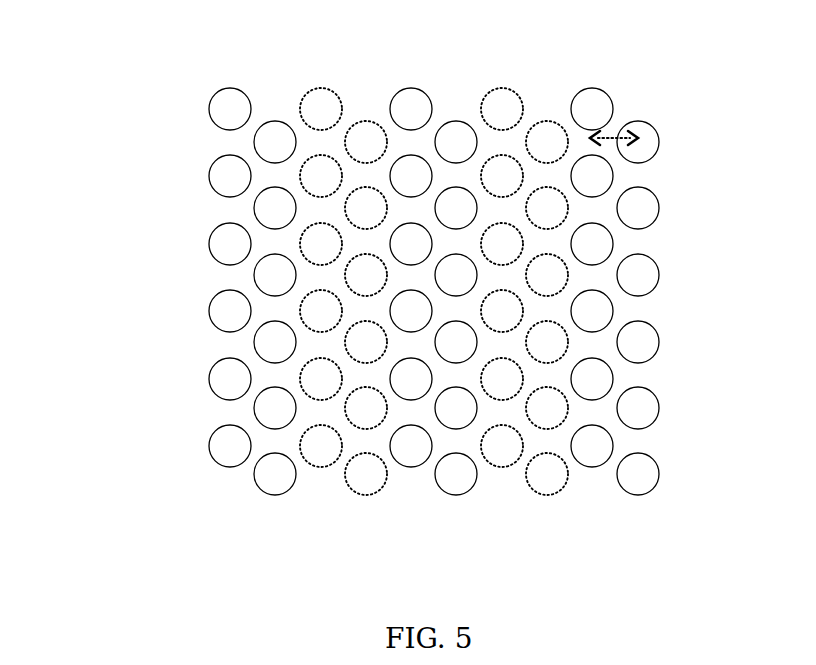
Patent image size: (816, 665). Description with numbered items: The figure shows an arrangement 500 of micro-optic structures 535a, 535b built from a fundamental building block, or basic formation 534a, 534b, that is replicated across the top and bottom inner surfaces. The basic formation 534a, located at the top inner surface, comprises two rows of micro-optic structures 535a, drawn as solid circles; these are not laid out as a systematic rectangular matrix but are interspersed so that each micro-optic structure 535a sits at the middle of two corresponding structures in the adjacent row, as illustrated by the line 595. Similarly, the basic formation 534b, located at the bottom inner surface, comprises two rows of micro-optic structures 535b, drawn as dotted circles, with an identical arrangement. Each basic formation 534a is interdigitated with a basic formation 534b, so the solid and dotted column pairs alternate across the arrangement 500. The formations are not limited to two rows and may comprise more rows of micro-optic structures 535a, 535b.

The arrangement 500 is at (44, 30).
The basic formation 534a is at (281, 505).
The basic formation 534b is at (372, 505).
The micro-optic structure 535a is at (228, 307).
The micro-optic structure 535b is at (507, 100).
The line 595 is at (623, 135).